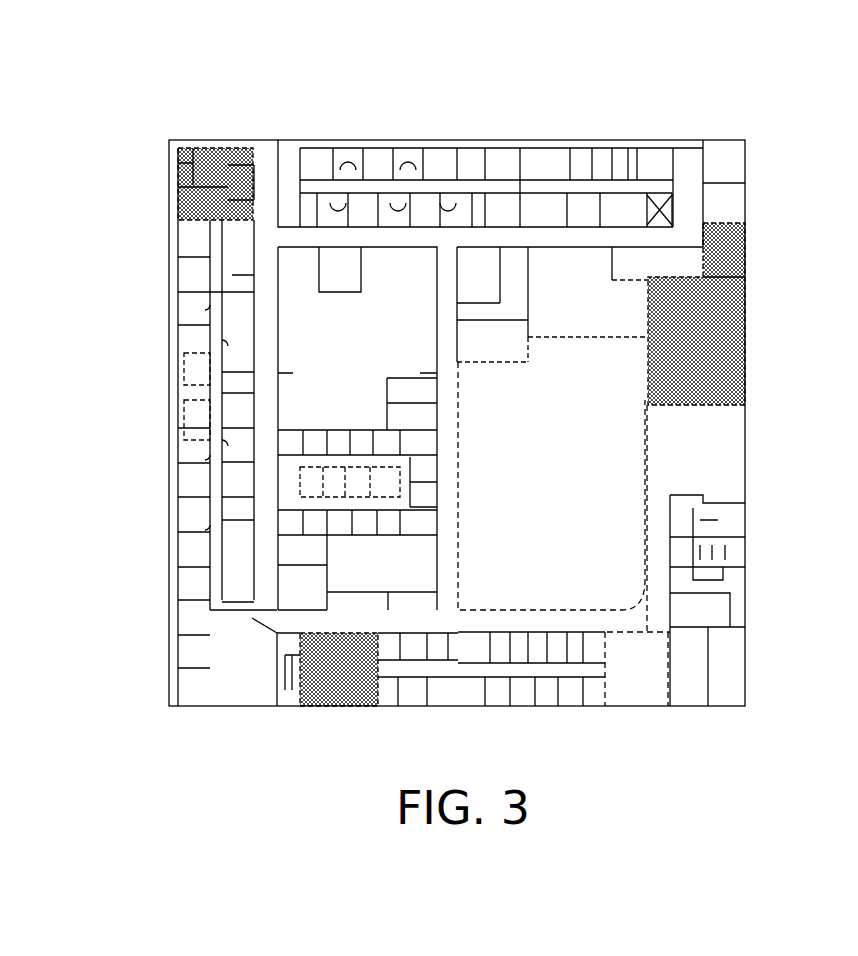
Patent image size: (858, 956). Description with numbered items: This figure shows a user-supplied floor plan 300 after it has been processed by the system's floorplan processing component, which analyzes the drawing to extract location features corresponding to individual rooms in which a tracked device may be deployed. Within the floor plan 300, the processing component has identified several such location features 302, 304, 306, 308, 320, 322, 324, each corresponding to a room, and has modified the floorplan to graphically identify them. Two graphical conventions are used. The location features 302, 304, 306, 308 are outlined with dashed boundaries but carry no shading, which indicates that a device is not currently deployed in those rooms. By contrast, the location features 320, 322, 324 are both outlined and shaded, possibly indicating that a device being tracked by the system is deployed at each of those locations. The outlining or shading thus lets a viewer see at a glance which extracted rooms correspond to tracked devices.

The floor plan 300 is at (706, 128).
The location feature 302 is at (188, 378).
The location feature 304 is at (188, 437).
The location feature 306 is at (622, 483).
The location feature 308 is at (637, 684).
The location feature 320 is at (209, 152).
The location feature 322 is at (703, 356).
The location feature 324 is at (333, 686).